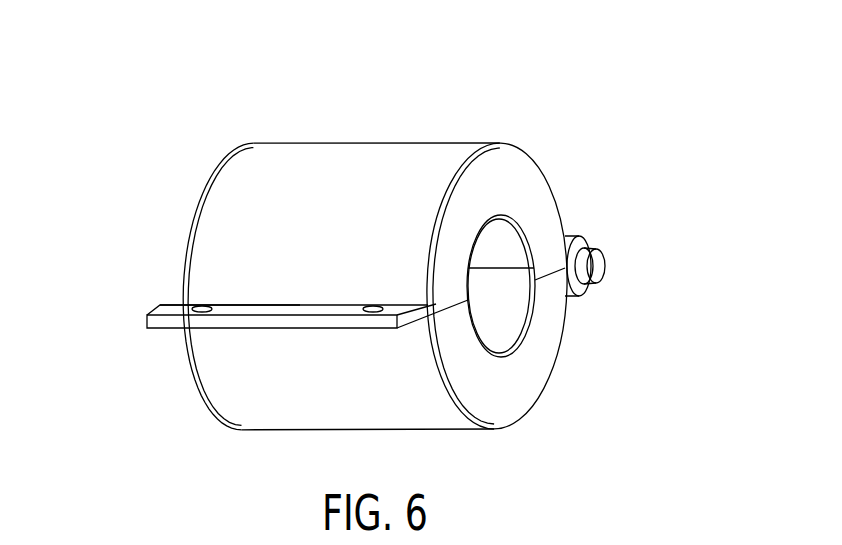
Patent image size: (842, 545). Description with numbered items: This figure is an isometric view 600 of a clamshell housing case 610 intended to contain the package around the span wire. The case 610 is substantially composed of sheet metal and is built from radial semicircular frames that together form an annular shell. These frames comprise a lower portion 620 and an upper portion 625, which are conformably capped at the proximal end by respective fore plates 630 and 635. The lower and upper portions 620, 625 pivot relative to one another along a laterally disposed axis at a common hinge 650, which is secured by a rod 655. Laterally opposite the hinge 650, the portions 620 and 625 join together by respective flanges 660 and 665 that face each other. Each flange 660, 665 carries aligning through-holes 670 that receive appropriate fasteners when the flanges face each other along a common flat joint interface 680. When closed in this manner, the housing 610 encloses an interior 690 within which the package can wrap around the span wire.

The isometric view 600 is at (604, 74).
The clamshell housing case 610 is at (718, 137).
The lower portion 620 is at (383, 412).
The upper portion 625 is at (375, 158).
The fore plate 630 is at (203, 396).
The fore plate 635 is at (205, 177).
The common hinge 650 is at (591, 292).
The rod 655 is at (606, 258).
The flange 660 is at (168, 330).
The flange 665 is at (161, 305).
The through-holes 670 is at (201, 291).
The common flat joint interface 680 is at (130, 322).
The interior 690 is at (500, 316).